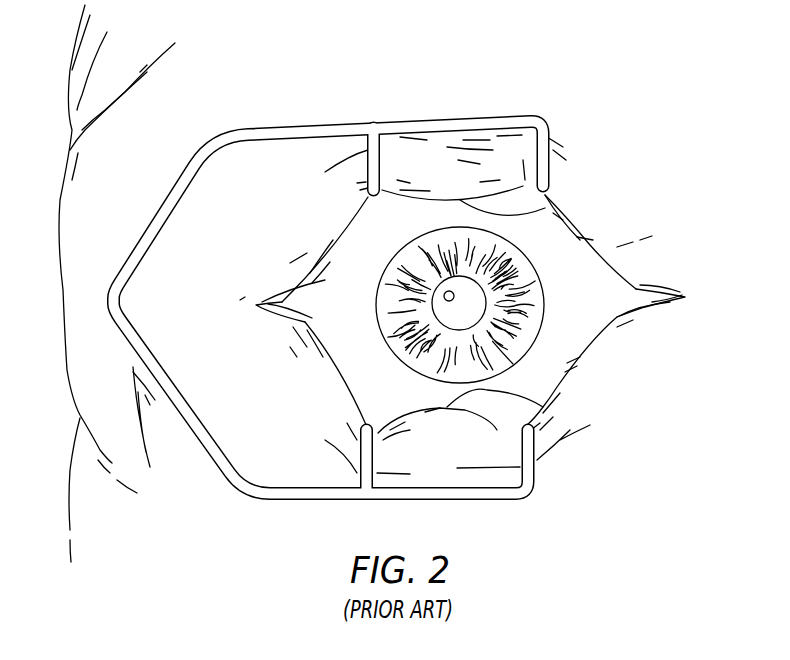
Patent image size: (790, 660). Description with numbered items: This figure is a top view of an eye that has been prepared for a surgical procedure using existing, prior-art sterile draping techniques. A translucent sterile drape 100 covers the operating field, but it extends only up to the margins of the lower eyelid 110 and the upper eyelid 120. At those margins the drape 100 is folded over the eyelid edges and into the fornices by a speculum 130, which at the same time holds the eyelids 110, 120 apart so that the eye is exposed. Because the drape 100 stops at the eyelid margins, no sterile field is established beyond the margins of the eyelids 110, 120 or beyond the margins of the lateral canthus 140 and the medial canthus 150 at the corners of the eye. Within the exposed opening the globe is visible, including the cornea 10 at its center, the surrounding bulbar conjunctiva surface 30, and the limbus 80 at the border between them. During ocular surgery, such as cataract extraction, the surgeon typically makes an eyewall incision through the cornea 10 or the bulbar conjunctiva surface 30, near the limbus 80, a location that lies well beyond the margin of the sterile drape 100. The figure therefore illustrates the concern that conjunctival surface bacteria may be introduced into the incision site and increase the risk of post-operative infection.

The cornea 10 is at (476, 311).
The bulbar conjunctiva surface 30 is at (563, 305).
The limbus 80 is at (395, 350).
The sterile drape 100 is at (452, 180).
The lower eyelid 110 is at (533, 397).
The upper eyelid 120 is at (546, 209).
The speculum 130 is at (288, 128).
The lateral canthus 140 is at (280, 303).
The medial canthus 150 is at (640, 297).